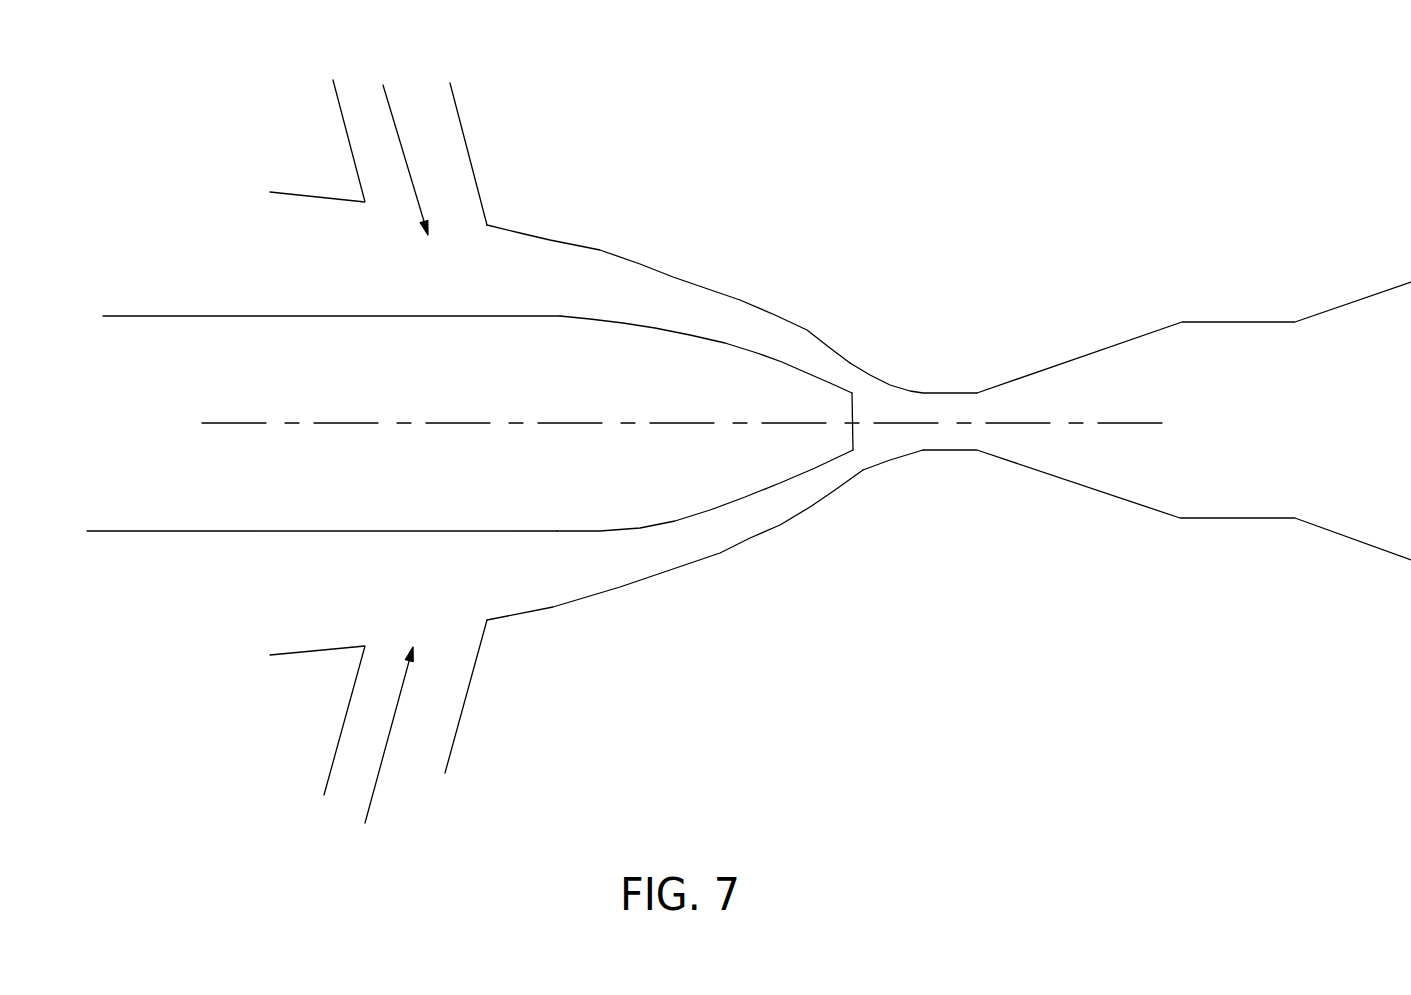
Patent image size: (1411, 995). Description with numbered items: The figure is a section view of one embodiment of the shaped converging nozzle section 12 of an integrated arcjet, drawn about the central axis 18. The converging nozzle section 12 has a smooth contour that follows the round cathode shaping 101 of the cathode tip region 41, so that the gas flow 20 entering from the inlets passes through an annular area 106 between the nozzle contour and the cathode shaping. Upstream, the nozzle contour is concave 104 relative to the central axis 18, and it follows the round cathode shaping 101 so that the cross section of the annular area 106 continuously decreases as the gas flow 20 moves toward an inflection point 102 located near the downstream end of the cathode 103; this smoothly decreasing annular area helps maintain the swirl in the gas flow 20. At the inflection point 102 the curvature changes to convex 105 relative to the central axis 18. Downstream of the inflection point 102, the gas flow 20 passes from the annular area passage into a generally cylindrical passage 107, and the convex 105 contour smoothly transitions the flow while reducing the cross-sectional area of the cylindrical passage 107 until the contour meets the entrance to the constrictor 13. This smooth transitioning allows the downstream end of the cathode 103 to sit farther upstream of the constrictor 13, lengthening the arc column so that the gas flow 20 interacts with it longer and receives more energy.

The converging nozzle section 12 is at (600, 250).
The constrictor 13 is at (947, 452).
The central axis 18 is at (715, 419).
The gas flow 20 is at (378, 133).
The cathode tip region 41 is at (598, 445).
The round cathode shaping 101 is at (690, 333).
The inflection point 102 is at (847, 357).
The downstream end of the cathode 103 is at (854, 413).
The concave contour 104 is at (718, 555).
The convex contour 105 is at (903, 460).
The annular area 106 is at (737, 320).
The cylindrical passage 107 is at (875, 433).